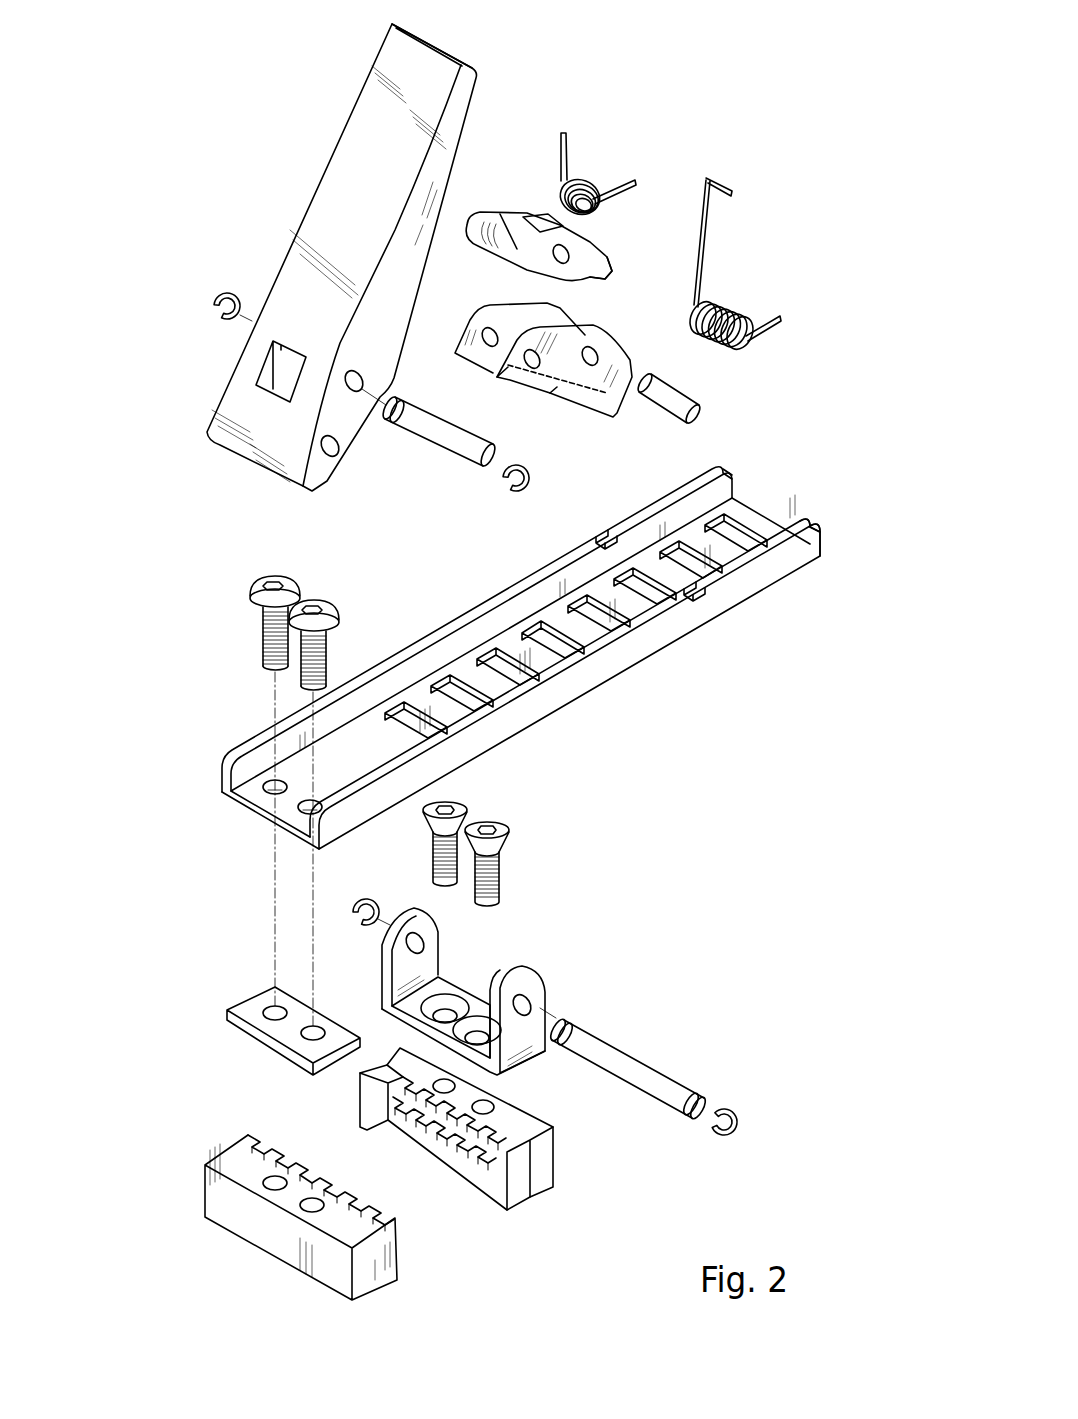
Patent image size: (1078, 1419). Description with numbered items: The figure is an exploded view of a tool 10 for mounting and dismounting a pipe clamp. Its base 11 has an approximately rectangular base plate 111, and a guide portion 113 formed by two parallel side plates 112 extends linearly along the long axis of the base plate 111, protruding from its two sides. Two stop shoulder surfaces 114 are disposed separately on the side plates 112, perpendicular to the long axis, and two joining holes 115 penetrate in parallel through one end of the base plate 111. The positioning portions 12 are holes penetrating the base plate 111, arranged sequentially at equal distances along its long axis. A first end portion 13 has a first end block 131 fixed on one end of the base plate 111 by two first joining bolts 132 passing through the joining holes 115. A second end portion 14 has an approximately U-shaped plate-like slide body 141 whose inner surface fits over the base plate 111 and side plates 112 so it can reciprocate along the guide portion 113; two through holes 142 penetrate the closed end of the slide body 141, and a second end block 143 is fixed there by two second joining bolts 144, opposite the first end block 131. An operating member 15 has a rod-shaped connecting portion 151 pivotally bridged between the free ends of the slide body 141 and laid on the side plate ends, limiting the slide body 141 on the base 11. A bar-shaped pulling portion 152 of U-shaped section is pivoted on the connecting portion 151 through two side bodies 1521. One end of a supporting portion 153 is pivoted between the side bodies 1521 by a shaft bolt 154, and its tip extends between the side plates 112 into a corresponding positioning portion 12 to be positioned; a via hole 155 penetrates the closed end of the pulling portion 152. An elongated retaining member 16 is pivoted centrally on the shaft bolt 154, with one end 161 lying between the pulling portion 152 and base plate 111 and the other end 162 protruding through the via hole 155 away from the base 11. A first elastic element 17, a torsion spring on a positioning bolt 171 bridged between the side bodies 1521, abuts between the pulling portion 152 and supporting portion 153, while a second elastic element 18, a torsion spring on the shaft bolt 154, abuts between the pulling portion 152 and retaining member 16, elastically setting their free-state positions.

The tool 10 is at (845, 1175).
The base 11 is at (792, 462).
The positioning portions 12 is at (528, 640).
The first end portion 13 is at (198, 1135).
The second end portion 14 is at (562, 960).
The operating member 15 is at (312, 128).
The retaining member 16 is at (530, 212).
The first elastic element 17 is at (733, 303).
The second elastic element 18 is at (588, 193).
The base plate 111 is at (267, 815).
The side plates 112 is at (237, 755).
The guide portion 113 is at (830, 516).
The stop shoulder surfaces 114 is at (597, 534).
The joining holes 115 is at (262, 793).
The first end block 131 is at (235, 1215).
The first joining bolts 132 is at (263, 590).
The slide body 141 is at (548, 992).
The through holes 142 is at (448, 1003).
The second end block 143 is at (560, 1160).
The second joining bolts 144 is at (455, 800).
The connecting portion 151 is at (660, 1085).
The pulling portion 152 is at (330, 200).
The supporting portion 153 is at (623, 352).
The shaft bolt 154 is at (437, 450).
The via hole 155 is at (268, 348).
The one end of the retaining member 161 is at (630, 265).
The other end of the retaining member 162 is at (480, 222).
The positioning bolt 171 is at (688, 405).
The side bodies 1521 is at (478, 76).